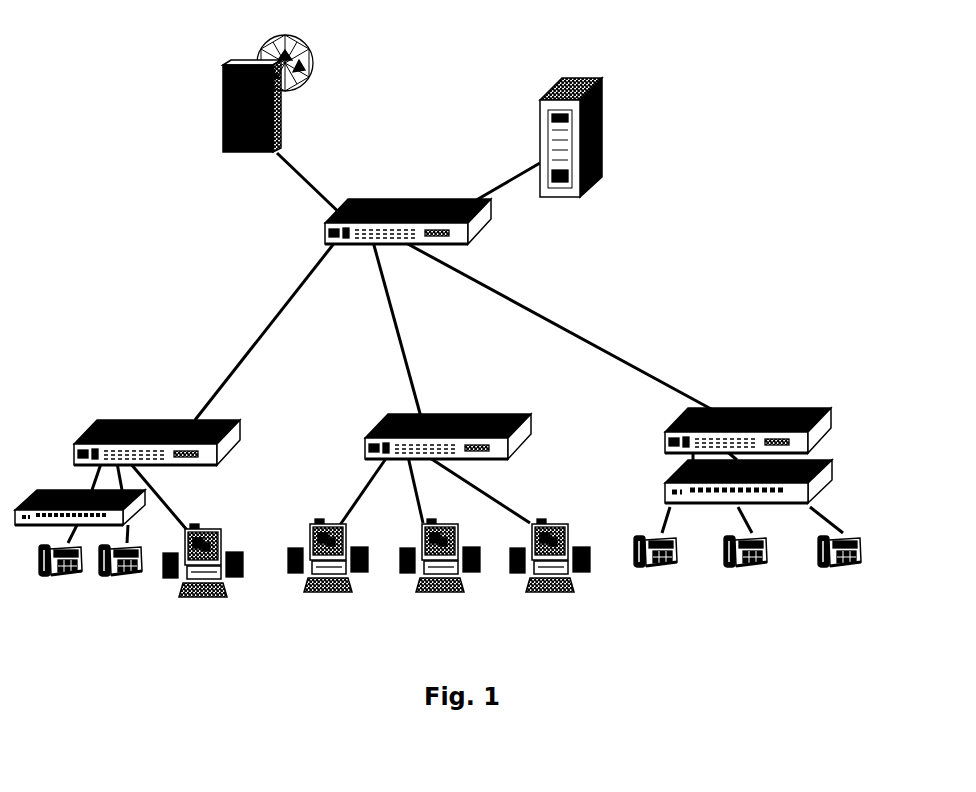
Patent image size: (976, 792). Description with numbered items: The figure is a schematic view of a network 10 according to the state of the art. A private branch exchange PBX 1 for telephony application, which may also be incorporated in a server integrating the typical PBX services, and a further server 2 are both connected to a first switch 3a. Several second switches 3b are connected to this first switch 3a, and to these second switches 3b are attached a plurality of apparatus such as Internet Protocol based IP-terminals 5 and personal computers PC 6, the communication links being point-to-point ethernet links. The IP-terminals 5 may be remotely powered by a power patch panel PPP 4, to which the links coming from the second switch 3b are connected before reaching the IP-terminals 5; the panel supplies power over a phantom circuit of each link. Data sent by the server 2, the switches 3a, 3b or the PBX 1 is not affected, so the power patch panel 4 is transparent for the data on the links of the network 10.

The private branch exchange PBX 1 is at (277, 107).
The server 2 is at (603, 98).
The first switch 3a is at (397, 202).
The second switch 3b is at (145, 418).
The power patch panel PPP 4 is at (43, 487).
The Internet Protocol IP based terminal 5 is at (110, 583).
The personal computer PC 6 is at (210, 590).
The network 10 is at (677, 280).